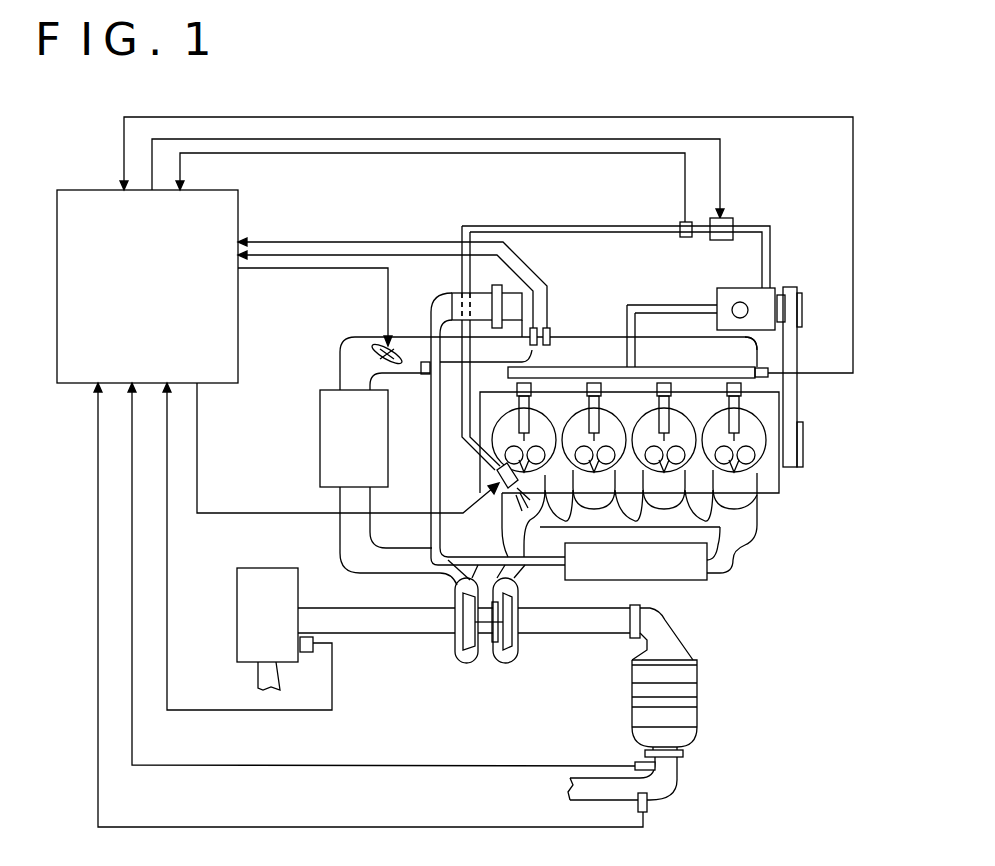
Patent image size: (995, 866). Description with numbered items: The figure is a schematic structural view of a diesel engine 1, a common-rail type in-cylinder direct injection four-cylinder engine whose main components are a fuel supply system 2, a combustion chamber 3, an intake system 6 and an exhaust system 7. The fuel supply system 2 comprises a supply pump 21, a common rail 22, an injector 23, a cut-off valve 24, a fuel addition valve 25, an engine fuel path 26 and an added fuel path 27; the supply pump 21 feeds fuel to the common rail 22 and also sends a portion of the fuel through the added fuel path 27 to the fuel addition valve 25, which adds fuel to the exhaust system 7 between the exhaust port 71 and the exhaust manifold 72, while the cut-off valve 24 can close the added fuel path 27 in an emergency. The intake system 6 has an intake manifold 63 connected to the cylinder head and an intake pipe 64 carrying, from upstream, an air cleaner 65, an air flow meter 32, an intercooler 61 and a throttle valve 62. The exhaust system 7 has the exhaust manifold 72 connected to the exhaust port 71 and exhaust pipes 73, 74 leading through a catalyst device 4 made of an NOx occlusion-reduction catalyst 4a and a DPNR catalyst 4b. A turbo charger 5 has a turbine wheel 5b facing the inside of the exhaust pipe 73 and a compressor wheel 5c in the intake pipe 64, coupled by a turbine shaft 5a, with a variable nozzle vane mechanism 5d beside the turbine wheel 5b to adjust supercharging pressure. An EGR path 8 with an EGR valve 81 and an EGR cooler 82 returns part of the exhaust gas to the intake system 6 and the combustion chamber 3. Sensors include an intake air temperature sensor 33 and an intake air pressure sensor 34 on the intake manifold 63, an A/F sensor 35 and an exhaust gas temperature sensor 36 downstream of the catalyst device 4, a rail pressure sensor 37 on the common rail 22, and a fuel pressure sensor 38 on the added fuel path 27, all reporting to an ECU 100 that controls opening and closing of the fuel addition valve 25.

The diesel engine 1 is at (790, 492).
The fuel supply system 2 is at (778, 283).
The combustion chamber 3 is at (781, 475).
The catalyst device 4 is at (705, 652).
The NOx occlusion-reduction catalyst 4a is at (688, 674).
The DPNR catalyst 4b is at (688, 717).
The turbo charger 5 is at (472, 676).
The turbine shaft 5a is at (485, 618).
The turbine wheel 5b is at (513, 648).
The compressor wheel 5c is at (466, 648).
The variable nozzle vane mechanism 5d is at (487, 648).
The intake system 6 is at (587, 330).
The exhaust system 7 is at (760, 516).
The EGR path 8 is at (742, 555).
The supply pump 21 is at (740, 288).
The common rail 22 is at (757, 360).
The injector 23 is at (742, 402).
The cut-off valve 24 is at (733, 218).
The fuel addition valve 25 is at (497, 479).
The engine fuel path 26 is at (672, 307).
The added fuel path 27 is at (536, 226).
The air flow meter 32 is at (306, 652).
The intake air temperature sensor 33 is at (422, 375).
The intake air pressure sensor 34 is at (548, 346).
The A/F sensor 35 is at (648, 808).
The exhaust gas temperature sensor 36 is at (636, 762).
The rail pressure sensor 37 is at (770, 376).
The fuel pressure sensor 38 is at (680, 222).
The intercooler 61 is at (320, 430).
The throttle valve 62 is at (380, 342).
The intake manifold 63 is at (758, 338).
The intake pipe 64 is at (338, 357).
The air cleaner 65 is at (237, 600).
The exhaust port 71 is at (658, 493).
The exhaust manifold 72 is at (512, 541).
The exhaust pipe 73 is at (594, 612).
The exhaust pipe 74 is at (675, 780).
The EGR valve 81 is at (462, 300).
The EGR cooler 82 is at (673, 581).
The ECU 100 is at (96, 190).